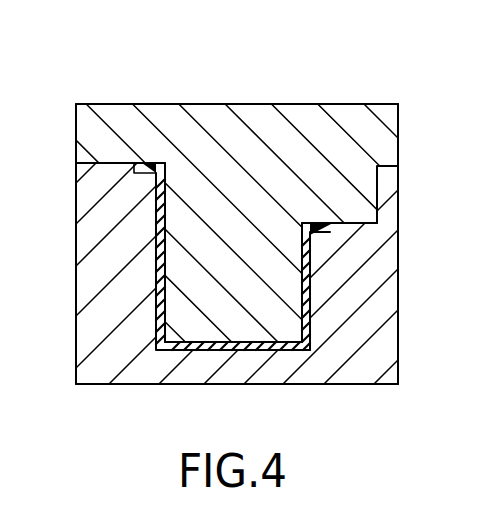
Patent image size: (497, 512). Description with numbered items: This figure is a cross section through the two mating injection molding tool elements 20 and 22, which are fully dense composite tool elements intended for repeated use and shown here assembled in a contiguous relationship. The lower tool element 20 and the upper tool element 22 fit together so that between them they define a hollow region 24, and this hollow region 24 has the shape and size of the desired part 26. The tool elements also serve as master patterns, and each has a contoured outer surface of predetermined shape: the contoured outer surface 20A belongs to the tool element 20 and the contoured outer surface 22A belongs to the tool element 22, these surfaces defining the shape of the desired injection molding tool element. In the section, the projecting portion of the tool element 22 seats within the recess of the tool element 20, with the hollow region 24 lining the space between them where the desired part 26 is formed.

The tool element 20 is at (70, 318).
The contoured outer surface 20A is at (360, 384).
The tool element 22 is at (356, 101).
The contoured outer surface 22A is at (237, 104).
The hollow region 24 is at (156, 209).
The desired part 26 is at (307, 292).